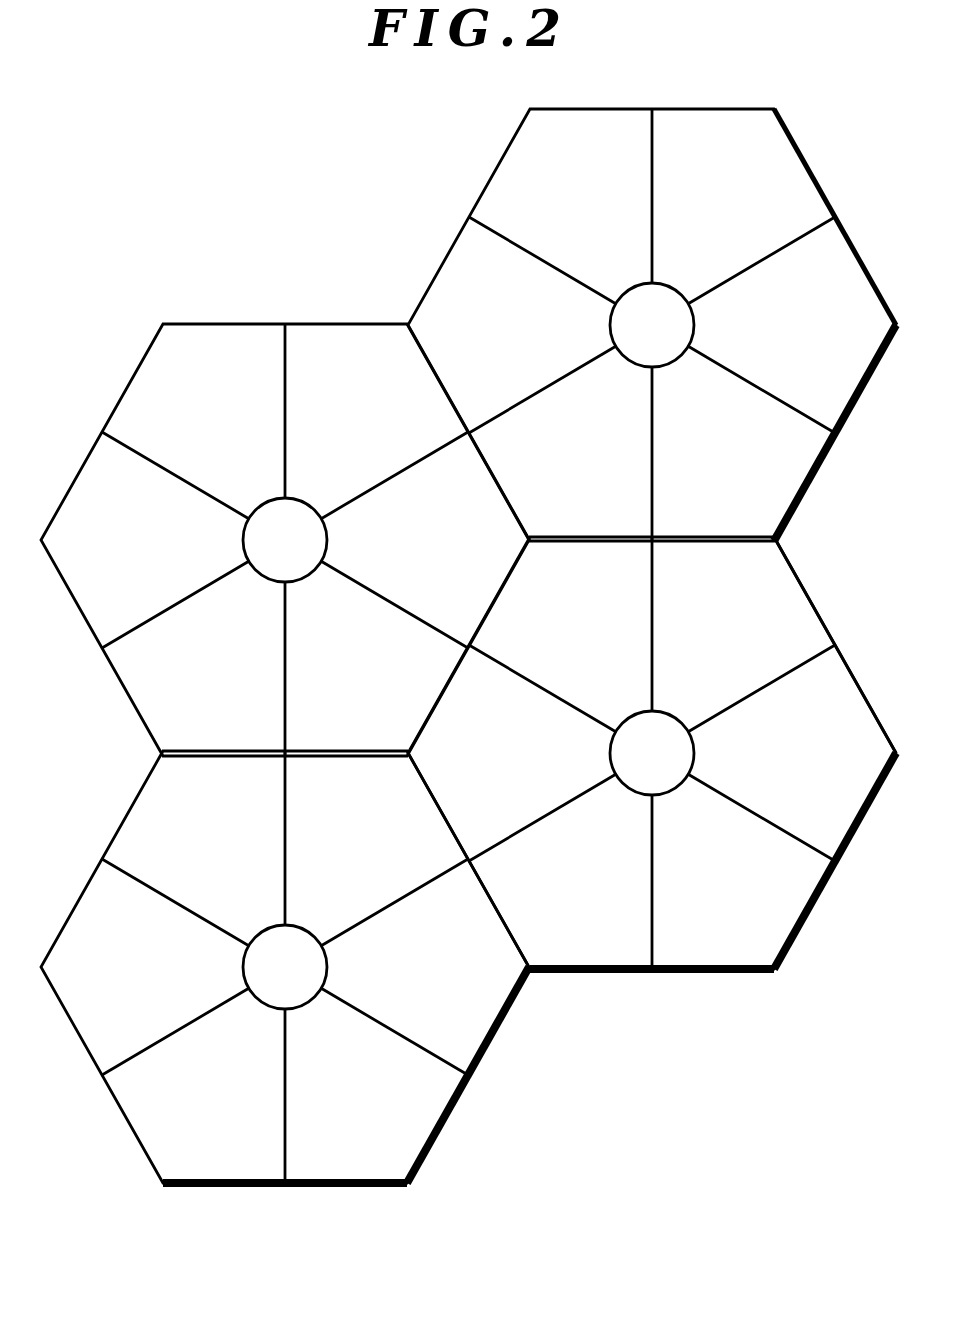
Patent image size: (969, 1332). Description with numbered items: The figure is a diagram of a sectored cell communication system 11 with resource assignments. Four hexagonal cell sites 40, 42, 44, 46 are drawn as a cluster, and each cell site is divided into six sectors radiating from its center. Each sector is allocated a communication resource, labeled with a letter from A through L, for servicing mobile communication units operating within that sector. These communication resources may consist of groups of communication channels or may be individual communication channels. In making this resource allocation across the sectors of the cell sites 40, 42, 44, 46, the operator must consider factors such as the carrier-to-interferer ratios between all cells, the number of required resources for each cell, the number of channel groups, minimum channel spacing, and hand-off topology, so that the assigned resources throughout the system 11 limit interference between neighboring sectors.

The sectored cell communication system 11 is at (733, 78).
The cell site 40 is at (285, 540).
The cell site 42 is at (652, 325).
The cell site 44 is at (285, 967).
The cell site 46 is at (652, 753).